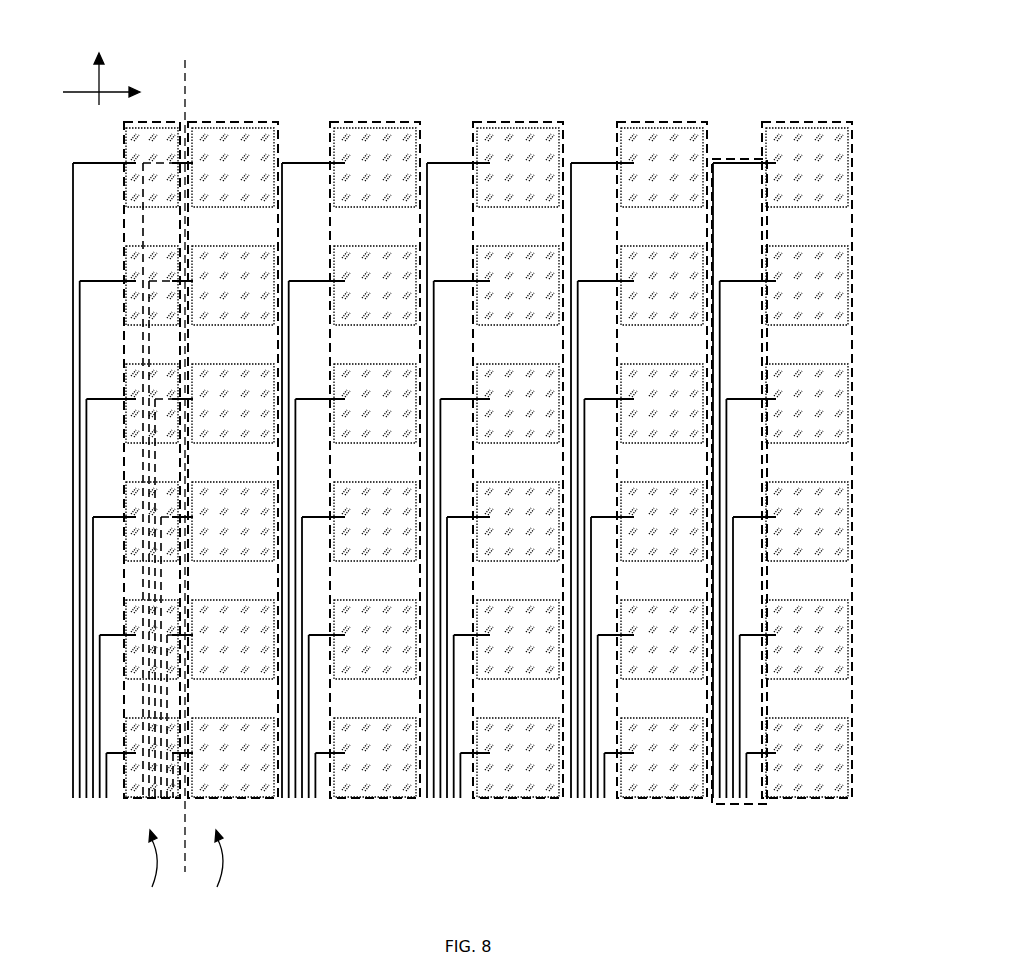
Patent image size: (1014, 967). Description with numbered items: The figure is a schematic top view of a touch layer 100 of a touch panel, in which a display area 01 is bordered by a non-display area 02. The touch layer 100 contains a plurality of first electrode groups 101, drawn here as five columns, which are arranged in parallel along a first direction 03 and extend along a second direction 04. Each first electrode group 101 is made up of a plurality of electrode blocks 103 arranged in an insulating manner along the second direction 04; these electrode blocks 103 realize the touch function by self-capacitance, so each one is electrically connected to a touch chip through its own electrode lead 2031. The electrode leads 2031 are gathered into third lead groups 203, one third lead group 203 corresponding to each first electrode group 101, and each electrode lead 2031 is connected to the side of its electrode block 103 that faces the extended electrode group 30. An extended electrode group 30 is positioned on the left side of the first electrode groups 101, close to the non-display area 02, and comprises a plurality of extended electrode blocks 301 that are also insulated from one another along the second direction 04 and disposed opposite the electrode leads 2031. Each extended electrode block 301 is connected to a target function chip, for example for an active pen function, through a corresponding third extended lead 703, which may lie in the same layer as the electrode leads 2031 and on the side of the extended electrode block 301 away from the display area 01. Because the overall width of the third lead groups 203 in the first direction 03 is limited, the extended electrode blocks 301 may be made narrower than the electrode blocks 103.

The touch layer 100 is at (156, 54).
The first electrode group 101 is at (233, 122).
The electrode block 103 is at (823, 167).
The extended electrode group 30 is at (147, 120).
The extended electrode block 301 is at (152, 145).
The third extended lead 703 is at (74, 197).
The third lead group 203 is at (733, 159).
The electrode lead 2031 is at (585, 163).
The display area 01 is at (216, 868).
The non-display area 02 is at (150, 868).
The first direction 03 is at (89, 92).
The second direction 04 is at (98, 95).